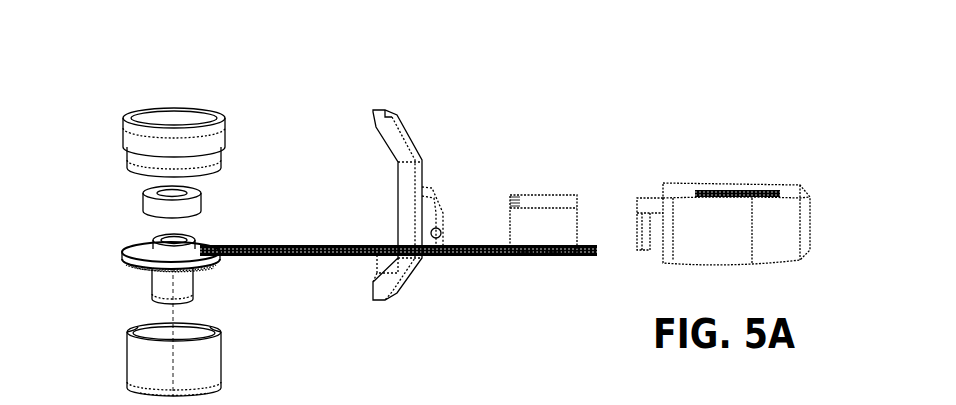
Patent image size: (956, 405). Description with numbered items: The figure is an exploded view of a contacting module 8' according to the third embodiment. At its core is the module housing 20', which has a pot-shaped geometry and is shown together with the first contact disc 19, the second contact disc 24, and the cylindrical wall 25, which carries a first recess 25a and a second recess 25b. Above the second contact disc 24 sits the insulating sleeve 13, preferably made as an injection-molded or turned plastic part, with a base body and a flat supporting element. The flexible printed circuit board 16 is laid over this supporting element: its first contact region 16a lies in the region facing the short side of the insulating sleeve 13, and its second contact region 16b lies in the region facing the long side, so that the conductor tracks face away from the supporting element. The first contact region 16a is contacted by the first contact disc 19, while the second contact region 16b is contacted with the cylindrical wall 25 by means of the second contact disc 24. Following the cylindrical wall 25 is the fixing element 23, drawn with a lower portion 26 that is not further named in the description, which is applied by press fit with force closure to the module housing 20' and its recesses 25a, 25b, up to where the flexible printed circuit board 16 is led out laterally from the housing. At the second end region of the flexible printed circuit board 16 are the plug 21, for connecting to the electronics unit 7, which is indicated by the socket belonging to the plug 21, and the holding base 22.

The contacting module 8' is at (96, 35).
The fixing element 23 is at (123, 138).
The cap lower portion 26 is at (128, 163).
The first contact disc 19 is at (195, 195).
The flexible printed circuit board 16 is at (280, 243).
The first contact region 16a is at (131, 248).
The second contact region 16b is at (206, 265).
The insulating sleeve 13 is at (122, 282).
The module housing 20' is at (58, 367).
The cylindrical wall 25 is at (160, 372).
The first recess 25a is at (220, 333).
The second recess 25b is at (130, 334).
The second contact disc 24 is at (196, 398).
The holding base 22 is at (372, 107).
The plug 21 is at (546, 192).
The electronics unit 7 is at (681, 176).